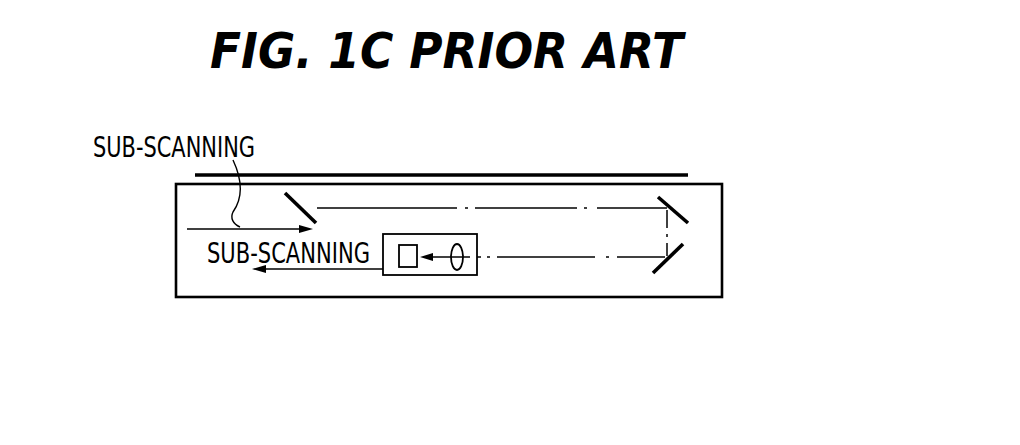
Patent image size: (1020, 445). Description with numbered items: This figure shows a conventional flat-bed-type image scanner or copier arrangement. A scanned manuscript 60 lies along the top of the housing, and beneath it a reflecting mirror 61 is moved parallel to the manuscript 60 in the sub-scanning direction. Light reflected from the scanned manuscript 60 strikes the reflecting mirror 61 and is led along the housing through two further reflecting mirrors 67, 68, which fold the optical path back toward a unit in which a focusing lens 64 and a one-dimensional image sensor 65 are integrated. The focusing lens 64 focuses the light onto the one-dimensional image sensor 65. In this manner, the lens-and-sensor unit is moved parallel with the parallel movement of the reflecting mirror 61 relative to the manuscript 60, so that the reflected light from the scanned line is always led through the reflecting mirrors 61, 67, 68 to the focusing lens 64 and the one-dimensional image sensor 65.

The scanned manuscript 60 is at (547, 175).
The reflecting mirror 61 is at (300, 206).
The focusing lens 64 is at (457, 270).
The one-dimensional image sensor 65 is at (401, 267).
The reflecting mirror 67 is at (684, 213).
The reflecting mirror 68 is at (675, 251).